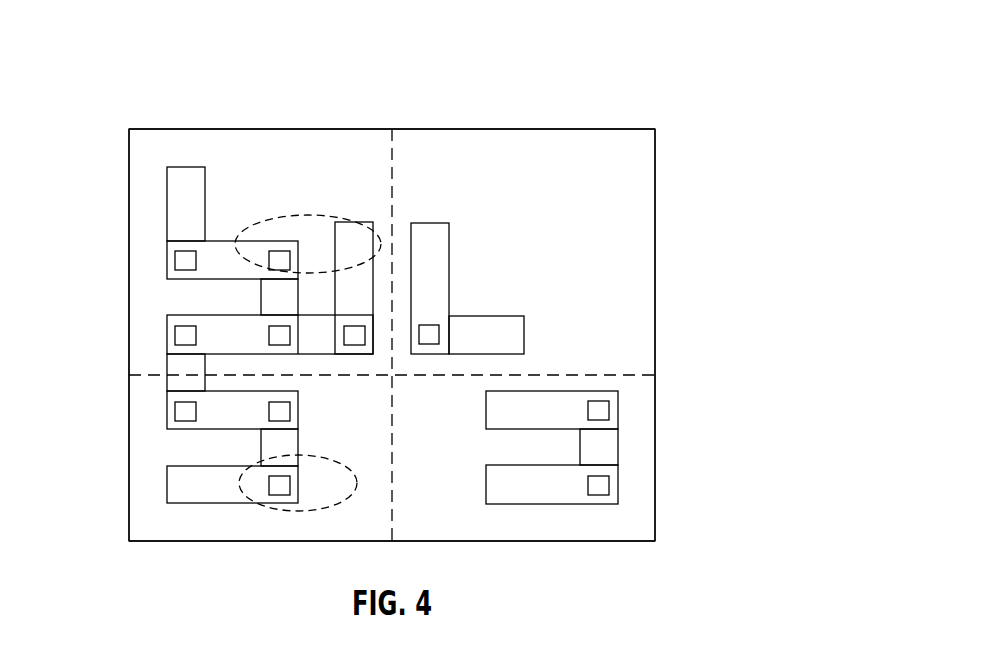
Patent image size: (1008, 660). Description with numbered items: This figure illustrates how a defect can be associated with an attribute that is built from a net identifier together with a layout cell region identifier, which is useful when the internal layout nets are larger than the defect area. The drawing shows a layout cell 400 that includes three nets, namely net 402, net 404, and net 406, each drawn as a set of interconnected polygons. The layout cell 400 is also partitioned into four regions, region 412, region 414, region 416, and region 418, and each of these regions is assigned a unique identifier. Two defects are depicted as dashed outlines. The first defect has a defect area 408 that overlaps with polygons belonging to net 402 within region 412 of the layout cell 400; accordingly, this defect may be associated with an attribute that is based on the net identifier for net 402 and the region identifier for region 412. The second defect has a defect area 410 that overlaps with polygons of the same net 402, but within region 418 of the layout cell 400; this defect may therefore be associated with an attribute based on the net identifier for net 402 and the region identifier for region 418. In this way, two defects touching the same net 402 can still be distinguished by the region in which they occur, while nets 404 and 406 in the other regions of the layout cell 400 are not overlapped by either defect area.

The layout cell 400 is at (738, 134).
The net 402 is at (205, 194).
The net 404 is at (524, 336).
The net 406 is at (618, 446).
The defect area 408 is at (317, 215).
The defect area 410 is at (345, 465).
The region 412 is at (138, 128).
The region 414 is at (590, 128).
The region 416 is at (647, 542).
The region 418 is at (138, 543).